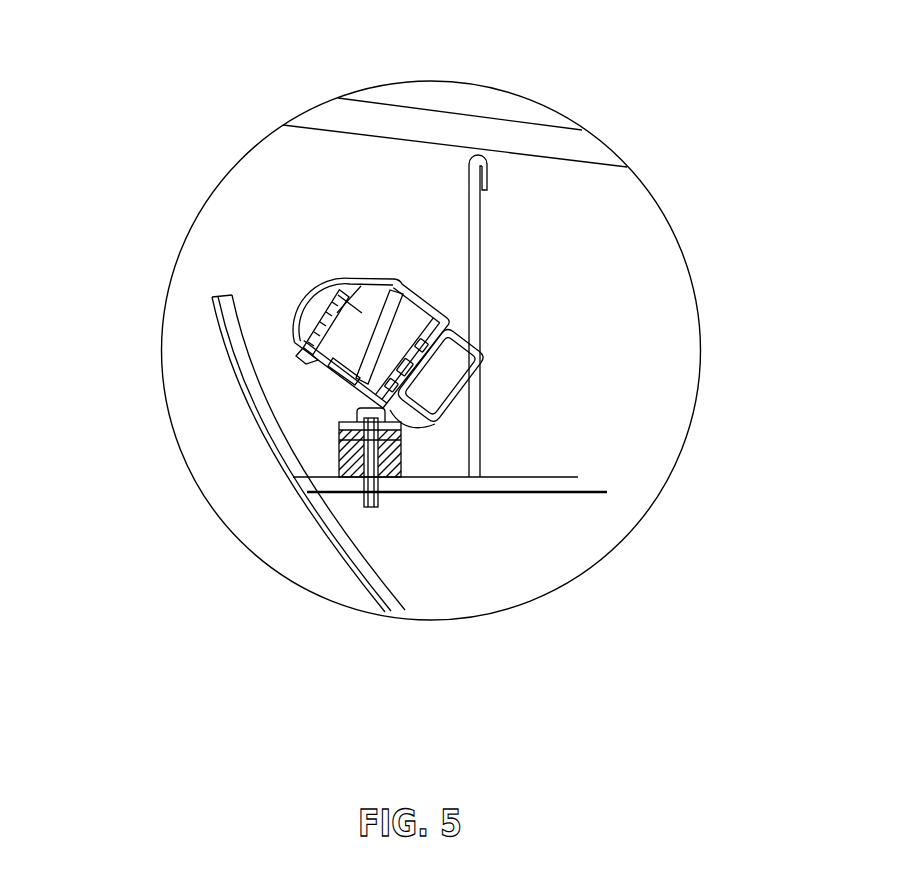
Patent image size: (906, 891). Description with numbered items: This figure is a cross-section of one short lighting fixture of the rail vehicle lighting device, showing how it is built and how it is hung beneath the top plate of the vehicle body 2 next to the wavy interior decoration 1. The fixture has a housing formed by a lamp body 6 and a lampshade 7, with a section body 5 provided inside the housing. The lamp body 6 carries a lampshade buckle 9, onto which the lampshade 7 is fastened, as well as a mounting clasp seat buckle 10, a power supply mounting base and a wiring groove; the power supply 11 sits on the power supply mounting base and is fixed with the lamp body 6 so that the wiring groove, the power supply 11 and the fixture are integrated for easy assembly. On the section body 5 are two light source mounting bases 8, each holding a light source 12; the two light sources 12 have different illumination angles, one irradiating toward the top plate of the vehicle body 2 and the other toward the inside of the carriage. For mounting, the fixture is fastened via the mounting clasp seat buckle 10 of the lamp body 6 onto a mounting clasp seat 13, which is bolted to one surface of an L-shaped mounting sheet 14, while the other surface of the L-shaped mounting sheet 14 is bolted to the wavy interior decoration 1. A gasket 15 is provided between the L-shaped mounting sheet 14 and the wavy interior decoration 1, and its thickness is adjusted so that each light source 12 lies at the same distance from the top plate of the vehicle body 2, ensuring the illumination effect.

The wavy interior decoration 1 is at (335, 490).
The top plate of the vehicle body 2 is at (488, 137).
The section body 5 is at (378, 505).
The lamp body 6 is at (407, 413).
The lampshade 7 is at (317, 288).
The light source mounting base 8 is at (320, 338).
The lampshade buckle 9 is at (307, 360).
The mounting clasp seat buckle 10 is at (407, 290).
The power supply 11 is at (440, 398).
The light source 12 is at (352, 279).
The mounting clasp seat 13 is at (437, 310).
The L-shaped mounting sheet 14 is at (420, 368).
The gasket 15 is at (336, 488).